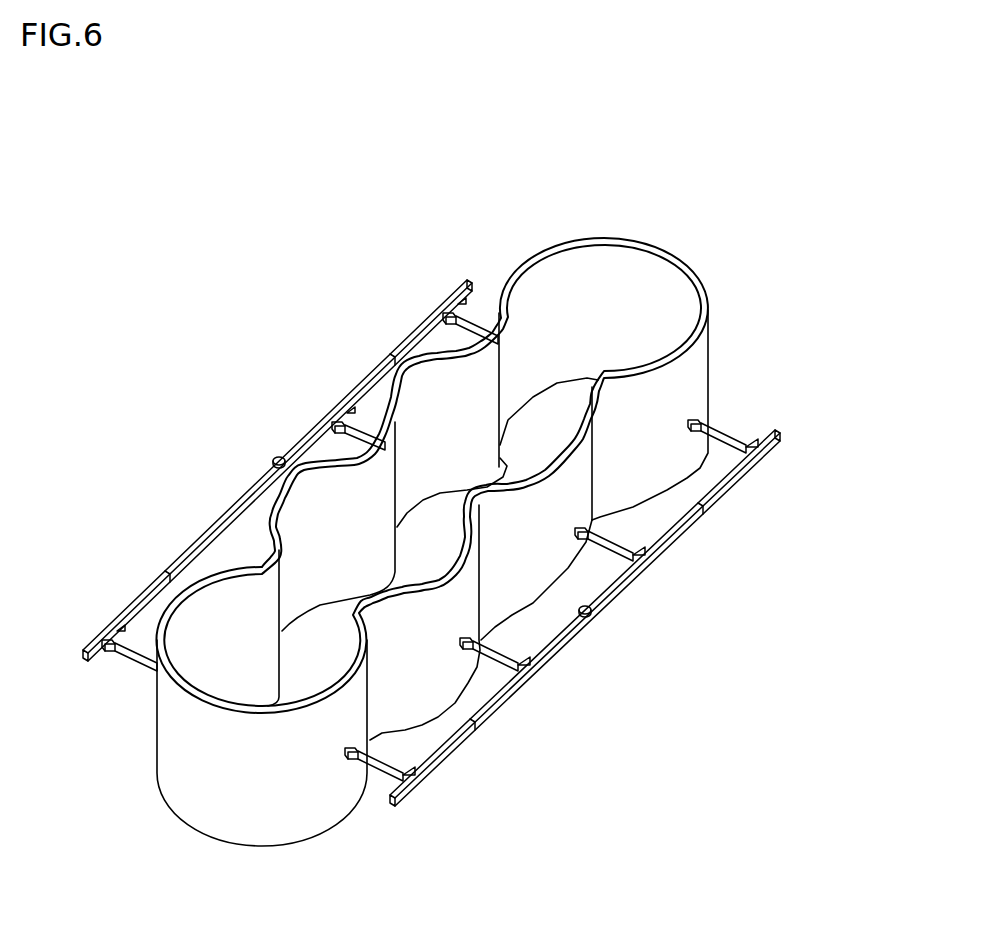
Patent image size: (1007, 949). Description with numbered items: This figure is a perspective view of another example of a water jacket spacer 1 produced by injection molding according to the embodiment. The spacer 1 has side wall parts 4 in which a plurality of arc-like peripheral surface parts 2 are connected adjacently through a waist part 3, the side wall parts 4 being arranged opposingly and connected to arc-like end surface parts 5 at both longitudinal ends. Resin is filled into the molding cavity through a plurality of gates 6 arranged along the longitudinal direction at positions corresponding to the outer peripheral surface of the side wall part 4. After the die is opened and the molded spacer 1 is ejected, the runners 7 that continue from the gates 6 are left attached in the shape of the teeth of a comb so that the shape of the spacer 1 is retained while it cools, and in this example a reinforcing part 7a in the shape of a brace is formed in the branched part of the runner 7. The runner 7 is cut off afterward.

The spacer 1 is at (699, 151).
The arc-like peripheral surface part 2 is at (430, 405).
The waist part 3 is at (500, 387).
The side wall part 4 is at (251, 276).
The arc-like end surface part 5 is at (252, 807).
The gate 6 is at (577, 533).
The runner 7 is at (133, 602).
The reinforcing part 7a is at (108, 648).